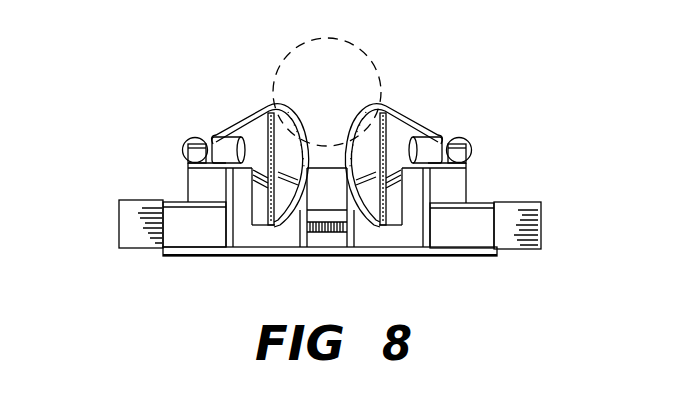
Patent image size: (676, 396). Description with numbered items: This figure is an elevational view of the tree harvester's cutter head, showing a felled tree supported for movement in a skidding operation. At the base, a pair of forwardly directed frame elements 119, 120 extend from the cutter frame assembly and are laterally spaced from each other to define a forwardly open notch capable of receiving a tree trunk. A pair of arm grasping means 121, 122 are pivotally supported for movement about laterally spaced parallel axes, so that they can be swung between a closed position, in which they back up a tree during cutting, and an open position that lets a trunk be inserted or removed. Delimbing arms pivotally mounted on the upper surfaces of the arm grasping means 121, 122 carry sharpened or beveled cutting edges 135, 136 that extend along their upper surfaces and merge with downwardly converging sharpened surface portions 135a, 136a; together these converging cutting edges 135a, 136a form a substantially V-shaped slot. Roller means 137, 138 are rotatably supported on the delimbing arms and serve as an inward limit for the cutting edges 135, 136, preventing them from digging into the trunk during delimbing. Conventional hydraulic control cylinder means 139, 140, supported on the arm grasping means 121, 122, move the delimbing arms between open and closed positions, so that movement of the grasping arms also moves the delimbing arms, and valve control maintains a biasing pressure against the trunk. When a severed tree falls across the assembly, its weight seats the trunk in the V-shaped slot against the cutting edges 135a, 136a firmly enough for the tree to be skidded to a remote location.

The frame element 119 is at (478, 205).
The frame element 120 is at (188, 206).
The arm grasping means 121 is at (417, 202).
The arm grasping means 122 is at (238, 188).
The sharpened cutting edge 135 is at (262, 107).
The downwardly converging sharpened surface portion 135a is at (298, 136).
The sharpened cutting edge 136 is at (400, 110).
The downwardly converging sharpened surface portion 136a is at (364, 115).
The roller means 137 is at (227, 146).
The roller means 138 is at (432, 147).
The hydraulic control cylinder means 139 is at (184, 150).
The hydraulic control cylinder means 140 is at (468, 158).